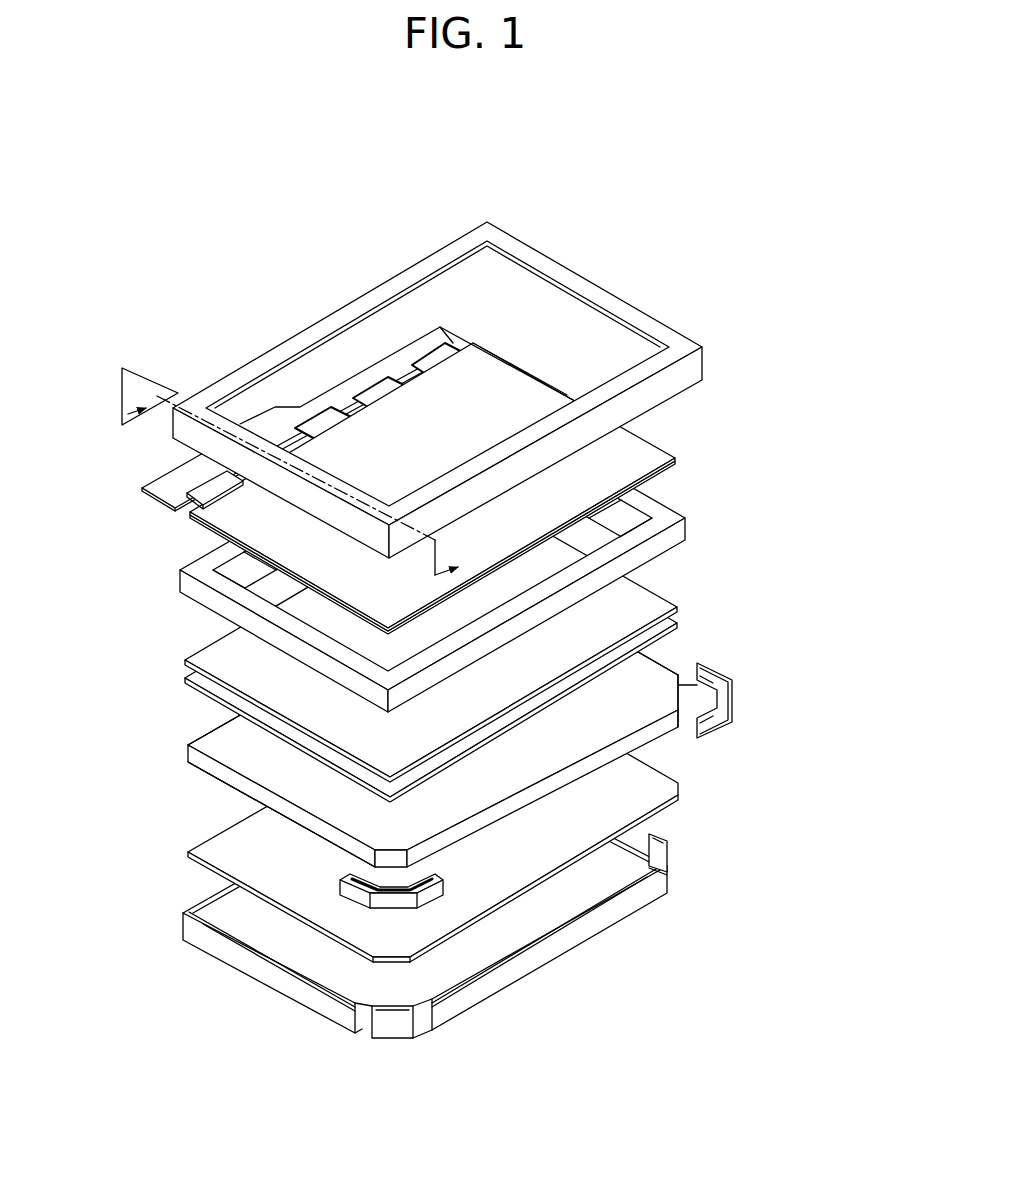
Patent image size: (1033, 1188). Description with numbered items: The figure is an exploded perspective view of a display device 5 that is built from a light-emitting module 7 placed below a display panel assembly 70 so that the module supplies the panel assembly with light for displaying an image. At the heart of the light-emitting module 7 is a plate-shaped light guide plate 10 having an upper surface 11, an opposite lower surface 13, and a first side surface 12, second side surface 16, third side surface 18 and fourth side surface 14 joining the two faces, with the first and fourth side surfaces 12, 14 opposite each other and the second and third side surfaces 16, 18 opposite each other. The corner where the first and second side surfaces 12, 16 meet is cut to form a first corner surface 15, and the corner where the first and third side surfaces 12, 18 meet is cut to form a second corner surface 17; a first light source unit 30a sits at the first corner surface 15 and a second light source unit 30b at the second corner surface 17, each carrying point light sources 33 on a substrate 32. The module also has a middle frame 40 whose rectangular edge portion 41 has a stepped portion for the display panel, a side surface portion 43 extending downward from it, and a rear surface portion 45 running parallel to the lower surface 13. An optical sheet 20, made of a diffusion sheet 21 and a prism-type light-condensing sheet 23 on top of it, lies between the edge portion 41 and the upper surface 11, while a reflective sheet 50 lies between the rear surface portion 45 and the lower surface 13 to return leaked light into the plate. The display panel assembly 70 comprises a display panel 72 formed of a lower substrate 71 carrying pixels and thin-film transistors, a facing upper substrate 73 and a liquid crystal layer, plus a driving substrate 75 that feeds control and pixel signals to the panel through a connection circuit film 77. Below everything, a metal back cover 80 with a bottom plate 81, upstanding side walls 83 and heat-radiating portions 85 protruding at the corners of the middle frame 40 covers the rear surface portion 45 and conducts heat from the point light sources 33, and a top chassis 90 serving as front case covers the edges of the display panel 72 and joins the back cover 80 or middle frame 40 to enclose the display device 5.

The display device 5 is at (448, 610).
The light-emitting module 7 is at (474, 746).
The light guide plate 10 is at (447, 718).
The upper surface 11 is at (230, 752).
The first side surface 12 is at (640, 725).
The lower surface 13 is at (228, 787).
The fourth side surface 14 is at (205, 745).
The first corner surface 15 is at (390, 850).
The second side surface 16 is at (297, 818).
The second corner surface 17 is at (720, 670).
The third side surface 18 is at (657, 662).
The optical sheet 20 is at (378, 646).
The diffusion sheet 21 is at (187, 678).
The light-condensing sheet 23 is at (187, 660).
The first light source unit 30a is at (340, 882).
The second light source unit 30b is at (762, 700).
The substrate 32 is at (733, 705).
The point light sources 33 is at (733, 690).
The middle frame 40 is at (506, 555).
The edge portion 41 is at (665, 508).
The side surface portion 43 is at (682, 530).
The rear surface portion 45 is at (686, 518).
The reflective sheet 50 is at (663, 793).
The display panel assembly 70 is at (351, 480).
The lower substrate 71 is at (213, 518).
The display panel 72 is at (369, 480).
The upper substrate 73 is at (222, 510).
The driving substrate 75 is at (190, 486).
The connection circuit film 77 is at (200, 492).
The back cover 80 is at (507, 926).
The bottom plate 81 is at (636, 866).
The side walls 83 is at (655, 905).
The heat-radiating portion 85 is at (660, 853).
The top chassis 90 is at (706, 350).